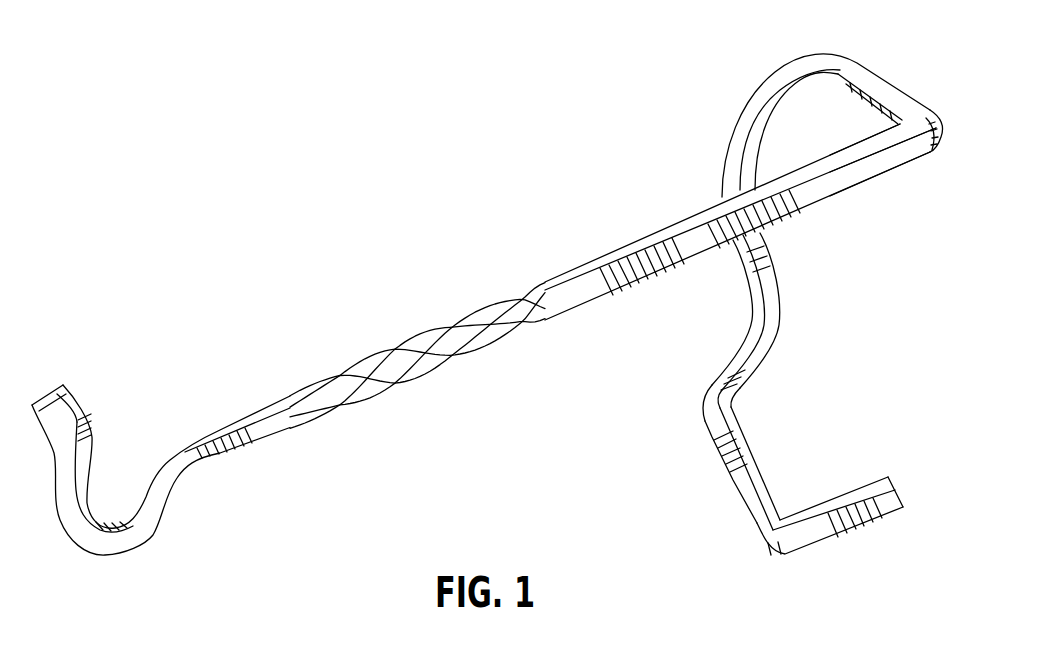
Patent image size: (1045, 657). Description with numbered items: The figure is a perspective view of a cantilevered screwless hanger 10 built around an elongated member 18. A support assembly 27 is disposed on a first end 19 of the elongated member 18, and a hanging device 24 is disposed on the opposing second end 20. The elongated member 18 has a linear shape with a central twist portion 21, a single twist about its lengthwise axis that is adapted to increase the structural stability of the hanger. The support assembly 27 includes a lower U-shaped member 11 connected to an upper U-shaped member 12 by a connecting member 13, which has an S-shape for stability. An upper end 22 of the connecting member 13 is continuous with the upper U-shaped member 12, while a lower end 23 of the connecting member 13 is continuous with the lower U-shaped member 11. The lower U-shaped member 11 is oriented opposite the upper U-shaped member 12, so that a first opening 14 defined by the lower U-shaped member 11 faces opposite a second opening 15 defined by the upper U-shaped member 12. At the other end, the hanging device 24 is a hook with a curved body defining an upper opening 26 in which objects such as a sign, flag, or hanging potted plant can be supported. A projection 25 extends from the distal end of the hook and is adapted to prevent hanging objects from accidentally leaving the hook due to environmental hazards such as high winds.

The cantilevered screwless hanger 10 is at (389, 225).
The lower U-shaped member 11 is at (730, 473).
The upper U-shaped member 12 is at (870, 83).
The connecting member 13 is at (745, 264).
The first opening 14 is at (810, 438).
The second opening 15 is at (814, 102).
The elongated member 18 is at (538, 283).
The first end 19 is at (867, 168).
The second end 20 is at (209, 427).
The central twist portion 21 is at (428, 375).
The upper end 22 is at (777, 80).
The lower end 23 is at (767, 370).
The hanging device 24 is at (100, 547).
The projection 25 is at (43, 403).
The upper opening 26 is at (125, 403).
The support assembly 27 is at (704, 138).